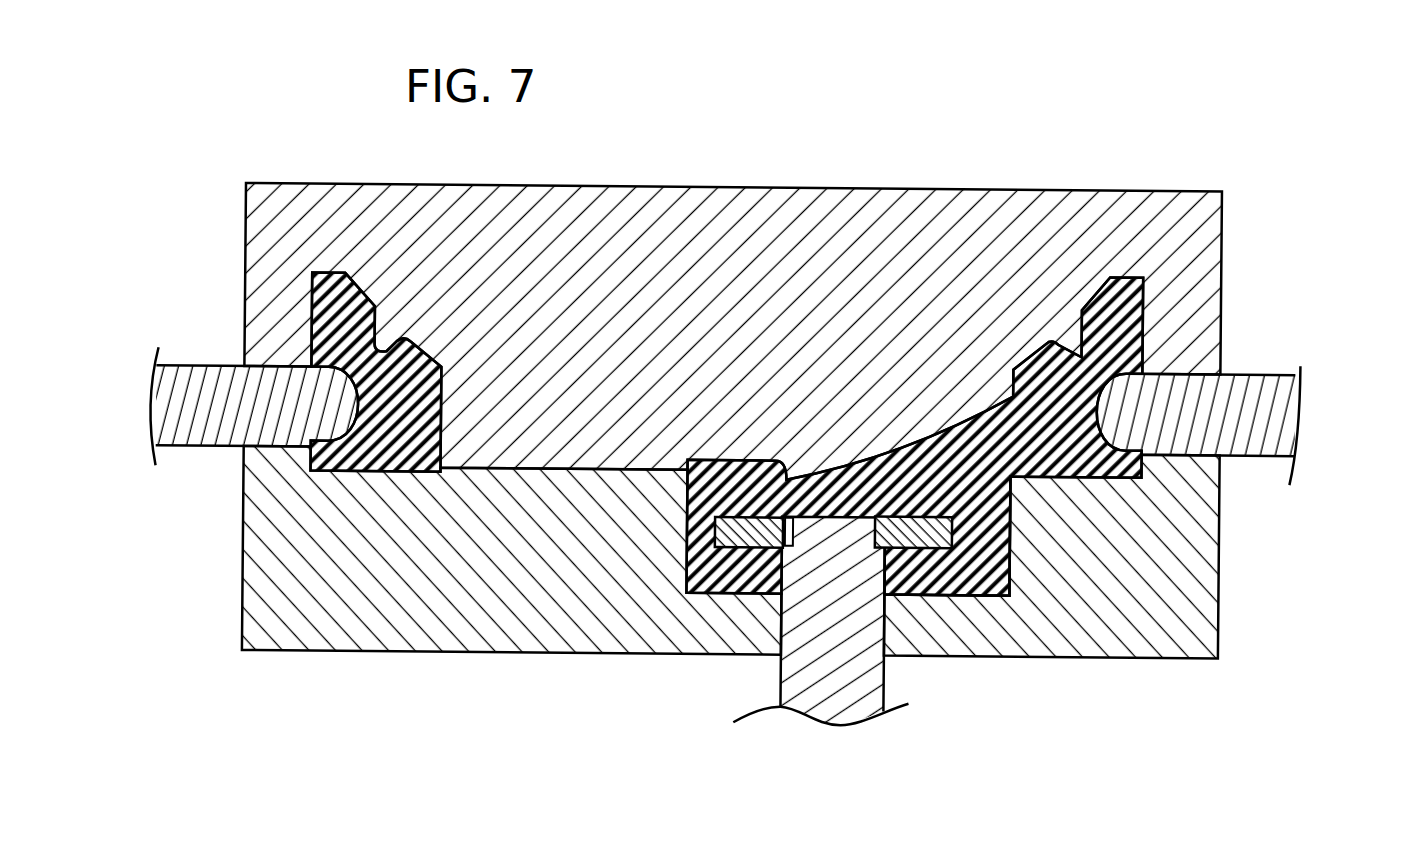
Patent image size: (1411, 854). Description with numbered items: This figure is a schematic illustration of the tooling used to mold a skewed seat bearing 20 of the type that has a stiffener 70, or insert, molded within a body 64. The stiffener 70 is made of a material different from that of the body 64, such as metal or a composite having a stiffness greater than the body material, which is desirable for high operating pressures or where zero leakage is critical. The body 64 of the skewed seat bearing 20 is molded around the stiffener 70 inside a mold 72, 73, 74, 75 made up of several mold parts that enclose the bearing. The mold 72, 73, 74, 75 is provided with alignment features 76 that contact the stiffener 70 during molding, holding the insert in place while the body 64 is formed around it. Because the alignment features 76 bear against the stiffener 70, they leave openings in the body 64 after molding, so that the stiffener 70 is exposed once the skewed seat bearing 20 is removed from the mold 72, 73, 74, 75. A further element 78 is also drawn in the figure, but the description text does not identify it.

The skewed seat bearing 20 is at (1150, 315).
The body 64 is at (977, 572).
The stiffener 70 is at (923, 543).
The mold 72 is at (1212, 546).
The mold 73 is at (1250, 414).
The mold 74 is at (1213, 257).
The mold 75 is at (190, 400).
The alignment features 76 is at (790, 684).
The ring 78 is at (787, 513).